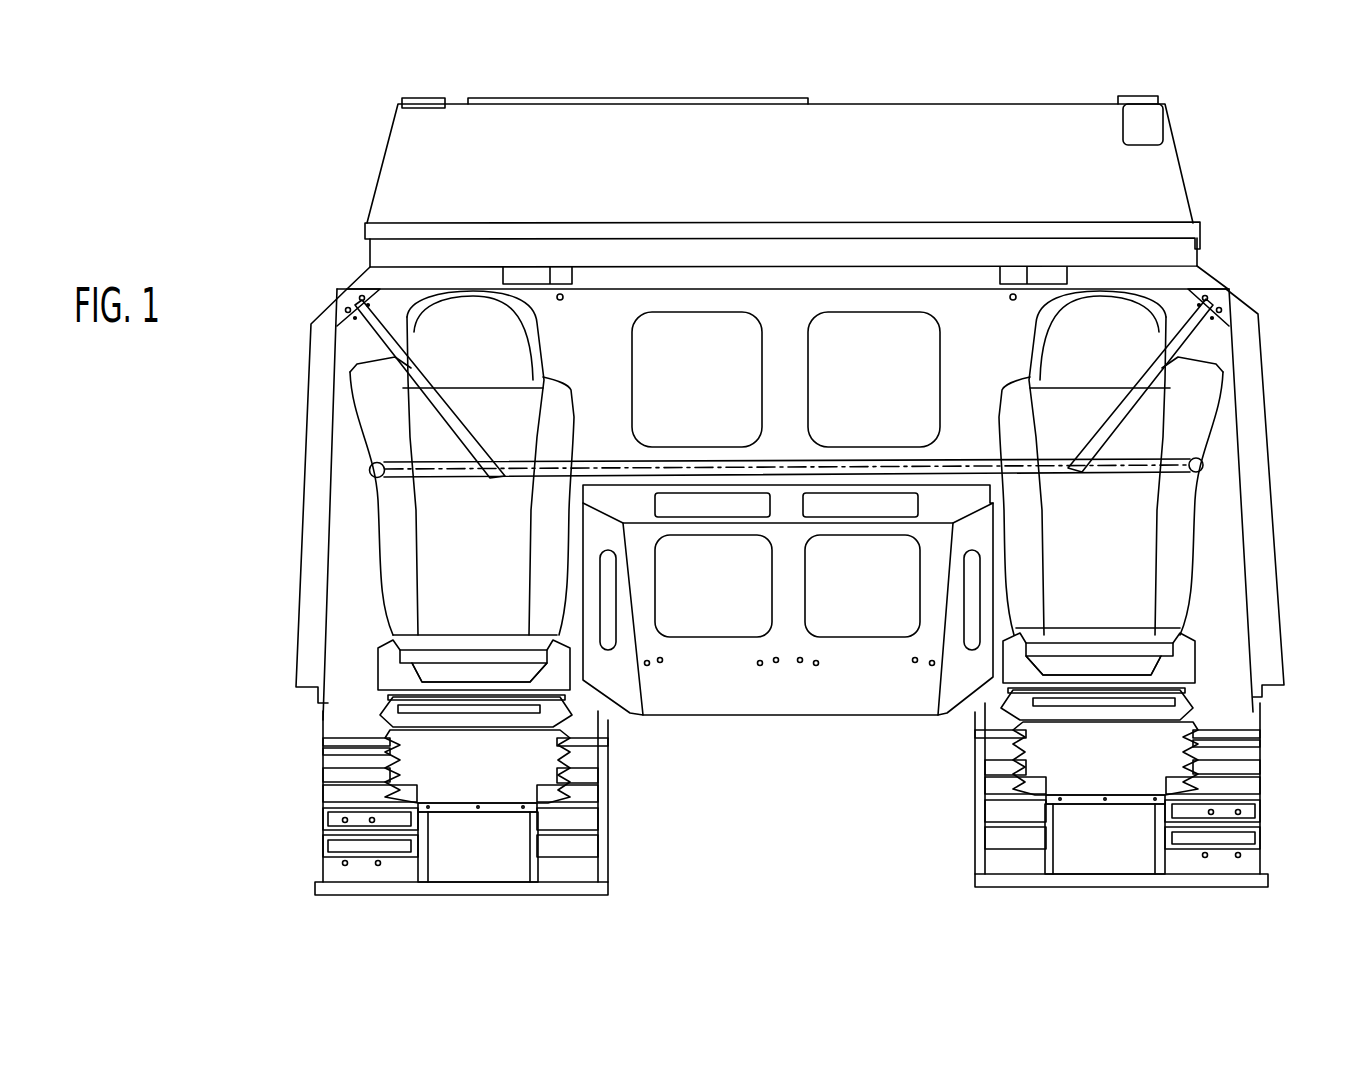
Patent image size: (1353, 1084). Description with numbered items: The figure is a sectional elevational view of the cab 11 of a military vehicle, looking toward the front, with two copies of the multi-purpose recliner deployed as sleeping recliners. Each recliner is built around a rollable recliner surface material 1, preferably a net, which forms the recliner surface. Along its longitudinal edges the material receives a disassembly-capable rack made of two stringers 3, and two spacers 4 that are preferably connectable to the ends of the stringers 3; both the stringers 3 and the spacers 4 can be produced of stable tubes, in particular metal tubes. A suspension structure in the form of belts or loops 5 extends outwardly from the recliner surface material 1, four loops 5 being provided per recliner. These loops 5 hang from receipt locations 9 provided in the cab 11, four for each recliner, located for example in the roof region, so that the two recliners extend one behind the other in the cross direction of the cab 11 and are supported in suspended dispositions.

The recliner surface material 1 is at (787, 415).
The stringers 3 is at (805, 462).
The spacers 4 is at (373, 474).
The loops 5 is at (440, 415).
The receipt locations 9 is at (348, 305).
The cab 11 is at (1218, 342).